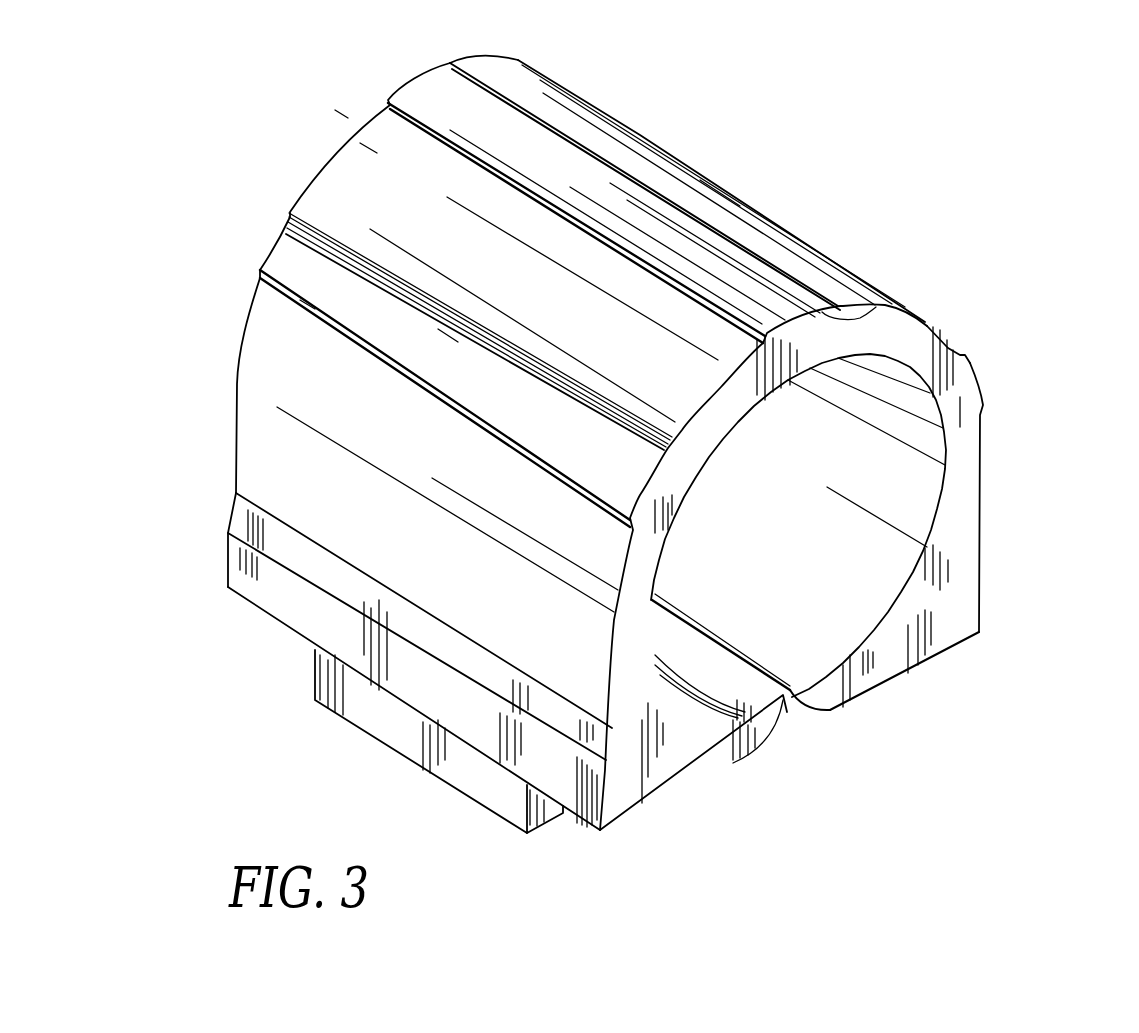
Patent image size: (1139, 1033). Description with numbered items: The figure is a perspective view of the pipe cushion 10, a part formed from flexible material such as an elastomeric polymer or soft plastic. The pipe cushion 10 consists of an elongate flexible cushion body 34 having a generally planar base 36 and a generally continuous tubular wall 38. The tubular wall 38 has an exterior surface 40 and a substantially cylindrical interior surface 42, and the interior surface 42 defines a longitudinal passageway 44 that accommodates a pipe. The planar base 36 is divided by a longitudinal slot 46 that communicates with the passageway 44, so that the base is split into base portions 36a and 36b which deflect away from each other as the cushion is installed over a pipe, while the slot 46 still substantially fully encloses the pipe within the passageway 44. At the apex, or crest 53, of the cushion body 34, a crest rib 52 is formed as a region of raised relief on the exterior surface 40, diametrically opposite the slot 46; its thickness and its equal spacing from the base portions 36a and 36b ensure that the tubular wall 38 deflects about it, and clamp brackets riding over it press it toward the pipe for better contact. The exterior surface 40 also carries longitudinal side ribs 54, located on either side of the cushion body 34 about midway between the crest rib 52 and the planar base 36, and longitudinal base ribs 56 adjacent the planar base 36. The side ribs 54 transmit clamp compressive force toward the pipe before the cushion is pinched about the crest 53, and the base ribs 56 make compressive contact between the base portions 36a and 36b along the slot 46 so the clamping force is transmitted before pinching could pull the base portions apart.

The pipe cushion 10 is at (203, 91).
The cushion body 34 is at (243, 385).
The planar base 36 is at (1037, 702).
The base portion 36a is at (687, 750).
The base portion 36b is at (897, 640).
The tubular wall 38 is at (967, 437).
The exterior surface 40 is at (811, 265).
The cylindrical interior surface 42 is at (913, 437).
The longitudinal passageway 44 is at (833, 523).
The longitudinal slot 46 is at (790, 711).
The crest rib 52 is at (428, 82).
The crest 53 is at (873, 307).
The side rib 54 is at (282, 258).
The base rib 56 is at (241, 548).